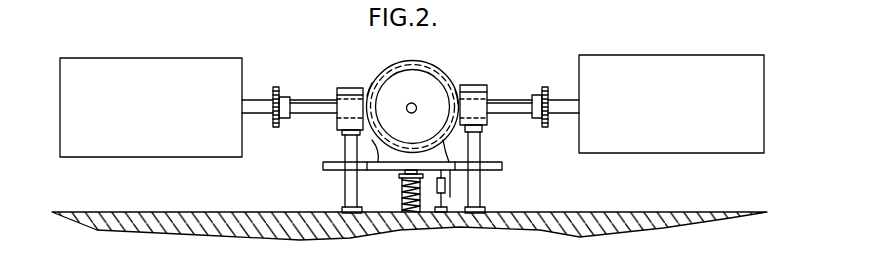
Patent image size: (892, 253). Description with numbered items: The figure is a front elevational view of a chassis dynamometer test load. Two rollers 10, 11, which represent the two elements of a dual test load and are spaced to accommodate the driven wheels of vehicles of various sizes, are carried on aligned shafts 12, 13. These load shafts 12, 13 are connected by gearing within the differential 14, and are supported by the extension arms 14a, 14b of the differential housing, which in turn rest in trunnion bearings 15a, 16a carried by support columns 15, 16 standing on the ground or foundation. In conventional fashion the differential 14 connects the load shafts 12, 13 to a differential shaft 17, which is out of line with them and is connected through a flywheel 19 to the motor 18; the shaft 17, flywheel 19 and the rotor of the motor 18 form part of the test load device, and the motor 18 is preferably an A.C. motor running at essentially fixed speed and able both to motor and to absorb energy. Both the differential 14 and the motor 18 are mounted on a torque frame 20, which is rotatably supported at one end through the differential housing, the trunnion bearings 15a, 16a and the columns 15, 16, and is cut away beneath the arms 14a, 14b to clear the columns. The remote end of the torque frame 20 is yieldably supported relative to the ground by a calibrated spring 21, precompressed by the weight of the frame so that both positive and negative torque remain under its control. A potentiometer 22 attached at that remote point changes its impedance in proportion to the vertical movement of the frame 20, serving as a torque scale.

The roller 10 is at (160, 113).
The roller 11 is at (682, 108).
The shaft 12 is at (306, 100).
The shaft 13 is at (507, 100).
The differential 14 is at (426, 77).
The differential housing extension arm 14a is at (367, 94).
The differential housing extension arm 14b is at (455, 90).
The support column 15 is at (345, 190).
The trunnion bearing 15a is at (346, 93).
The support column 16 is at (481, 190).
The trunnion bearing 16a is at (476, 90).
The differential shaft 17 is at (406, 109).
The motor 18 is at (415, 70).
The flywheel 19 is at (398, 64).
The torque frame 20 is at (323, 166).
The calibrated spring 21 is at (403, 186).
The potentiometer 22 is at (445, 197).